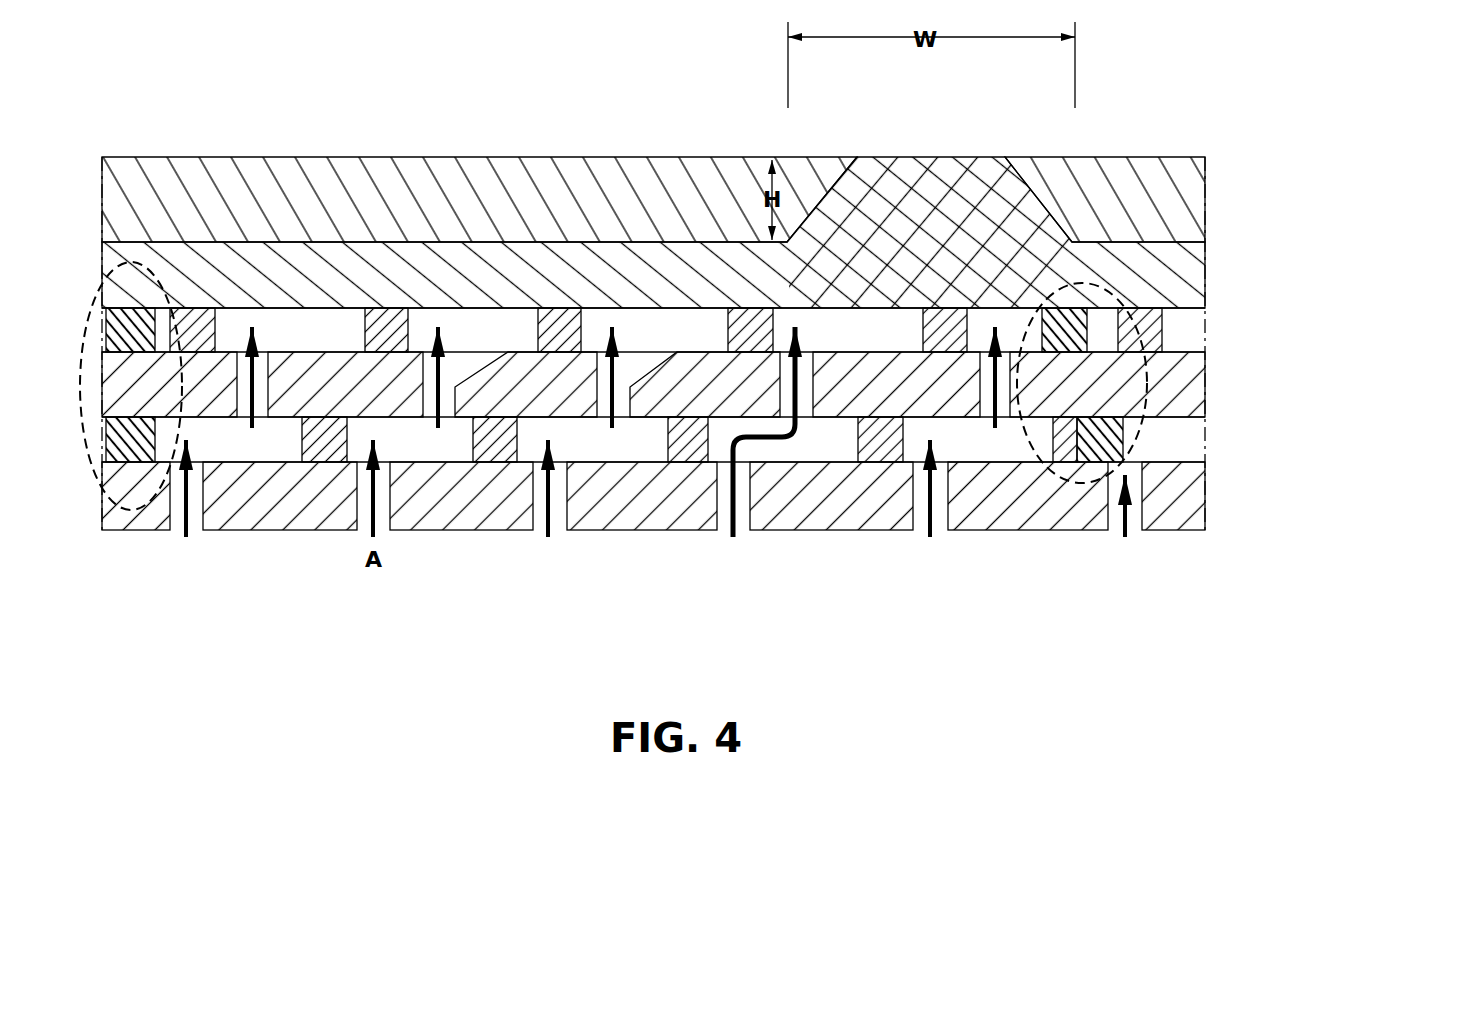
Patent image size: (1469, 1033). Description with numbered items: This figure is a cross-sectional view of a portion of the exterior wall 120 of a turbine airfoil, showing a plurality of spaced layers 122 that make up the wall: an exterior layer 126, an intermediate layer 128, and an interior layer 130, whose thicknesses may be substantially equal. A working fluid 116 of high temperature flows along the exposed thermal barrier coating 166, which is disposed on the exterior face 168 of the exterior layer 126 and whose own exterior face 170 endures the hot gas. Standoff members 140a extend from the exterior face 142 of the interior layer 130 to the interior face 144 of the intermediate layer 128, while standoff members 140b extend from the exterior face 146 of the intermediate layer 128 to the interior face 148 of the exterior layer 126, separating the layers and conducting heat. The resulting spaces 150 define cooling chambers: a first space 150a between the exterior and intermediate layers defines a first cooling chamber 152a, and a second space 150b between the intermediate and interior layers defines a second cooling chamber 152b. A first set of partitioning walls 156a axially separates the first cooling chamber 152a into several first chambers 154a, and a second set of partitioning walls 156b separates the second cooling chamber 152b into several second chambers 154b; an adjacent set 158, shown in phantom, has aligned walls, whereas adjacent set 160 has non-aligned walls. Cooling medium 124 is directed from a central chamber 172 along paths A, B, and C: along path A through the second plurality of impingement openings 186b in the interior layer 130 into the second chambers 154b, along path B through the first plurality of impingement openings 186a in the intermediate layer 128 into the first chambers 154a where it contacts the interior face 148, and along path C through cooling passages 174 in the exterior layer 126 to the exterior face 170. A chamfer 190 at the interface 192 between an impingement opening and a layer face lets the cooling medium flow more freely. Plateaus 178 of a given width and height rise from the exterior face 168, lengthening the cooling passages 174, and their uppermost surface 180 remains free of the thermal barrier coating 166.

The working fluid 116 is at (383, 117).
The exterior wall 120 is at (1215, 116).
The spaced layers 122 is at (751, 343).
The cooling medium 124 is at (737, 507).
The exterior layer 126 is at (1212, 250).
The intermediate layer 128 is at (1212, 360).
The interior layer 130 is at (1212, 470).
The standoff members 140a is at (885, 445).
The standoff members 140b is at (557, 318).
The exterior face of interior layer 142 is at (228, 462).
The interior face of intermediate layer 144 is at (650, 420).
The exterior face of intermediate layer 146 is at (690, 352).
The interior face of exterior layer 148 is at (480, 308).
The spaces 150 is at (760, 367).
The first space 150a is at (768, 231).
The second space 150b is at (760, 426).
The first cooling chamber 152a is at (303, 316).
The second cooling chamber 152b is at (612, 468).
The first chambers 154a is at (1177, 313).
The second chambers 154b is at (1012, 313).
The first set of partitioning walls 156a is at (130, 318).
The second set of partitioning walls 156b is at (133, 447).
The adjacent set 158 is at (108, 490).
The adjacent set 160 is at (1127, 423).
The thermal barrier coating 166 is at (1212, 157).
The exterior face of exterior layer 168 is at (723, 242).
The exterior face of TBC 170 is at (490, 157).
The central chamber 172 is at (690, 675).
The cooling passages 174 is at (862, 207).
The plateaus 178 is at (830, 188).
The uppermost surface 180 is at (892, 156).
The first plurality of impingement openings 186a is at (973, 423).
The second plurality of impingement openings 186b is at (528, 505).
The chamfer 190 is at (483, 365).
The interface 192 is at (675, 340).